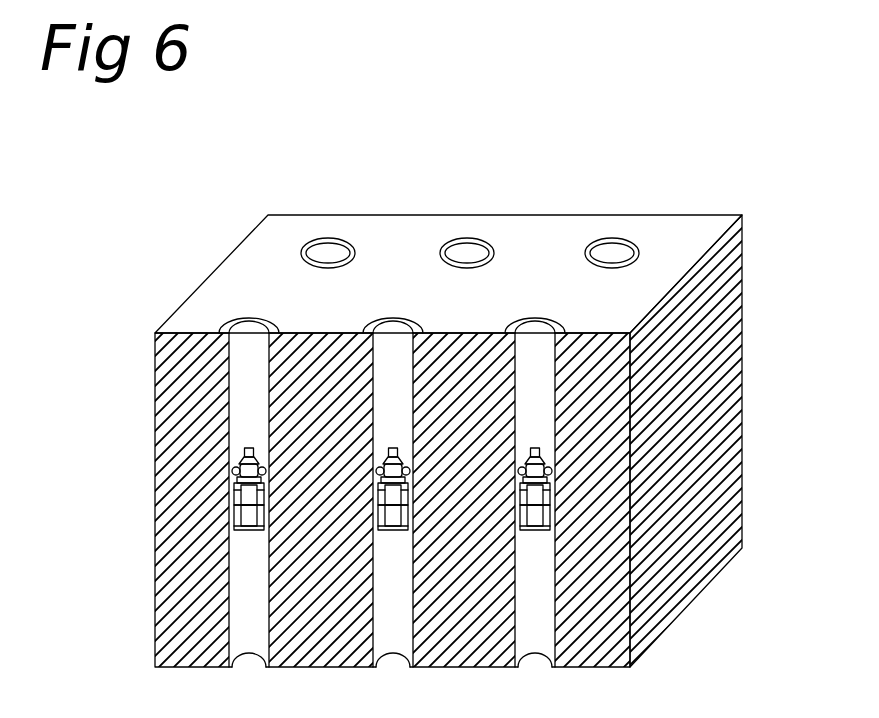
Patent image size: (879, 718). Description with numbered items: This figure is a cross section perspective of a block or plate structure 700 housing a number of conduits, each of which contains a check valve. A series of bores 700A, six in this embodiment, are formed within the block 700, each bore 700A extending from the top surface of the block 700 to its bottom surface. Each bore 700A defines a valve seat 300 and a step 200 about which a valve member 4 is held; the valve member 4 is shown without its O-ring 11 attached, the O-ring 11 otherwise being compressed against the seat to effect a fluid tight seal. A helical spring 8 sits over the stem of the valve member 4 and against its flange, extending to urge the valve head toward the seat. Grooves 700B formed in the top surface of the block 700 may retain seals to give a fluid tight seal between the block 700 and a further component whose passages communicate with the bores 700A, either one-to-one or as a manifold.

The block or plate structure 700 is at (198, 232).
The bores 700A is at (232, 402).
The grooves 700B is at (228, 322).
The valve member 4 is at (745, 443).
The O-ring 11 is at (238, 458).
The valve seat 300 is at (234, 470).
The step 200 is at (236, 490).
The helical spring 8 is at (236, 513).